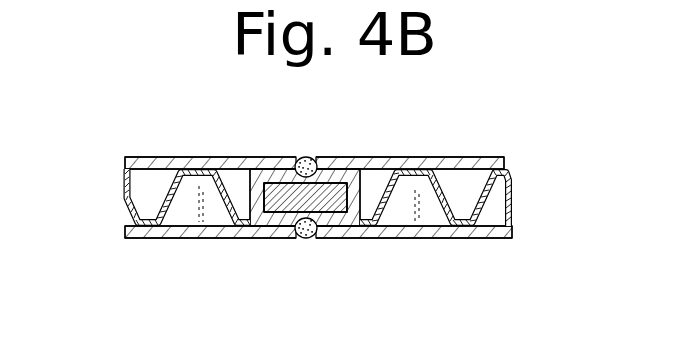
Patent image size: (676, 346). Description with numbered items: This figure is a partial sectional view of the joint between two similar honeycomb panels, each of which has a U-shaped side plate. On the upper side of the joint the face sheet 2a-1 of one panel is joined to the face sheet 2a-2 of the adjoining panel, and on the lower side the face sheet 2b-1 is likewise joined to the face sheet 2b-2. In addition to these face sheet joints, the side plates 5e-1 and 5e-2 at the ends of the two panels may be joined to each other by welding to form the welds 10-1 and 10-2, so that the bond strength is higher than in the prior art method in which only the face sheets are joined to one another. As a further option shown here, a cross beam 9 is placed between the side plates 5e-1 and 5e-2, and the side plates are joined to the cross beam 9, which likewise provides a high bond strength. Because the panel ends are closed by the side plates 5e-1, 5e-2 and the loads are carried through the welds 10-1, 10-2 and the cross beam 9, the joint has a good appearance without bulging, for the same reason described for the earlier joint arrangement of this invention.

The face sheet 2a-1 is at (420, 160).
The face sheet 2a-2 is at (213, 166).
The face sheet 2b-1 is at (413, 237).
The face sheet 2b-2 is at (172, 237).
The side plate 5e-1 is at (342, 223).
The side plate 5e-2 is at (267, 219).
The cross beam 9 is at (280, 183).
The weld 10-1 is at (308, 157).
The weld 10-2 is at (305, 239).